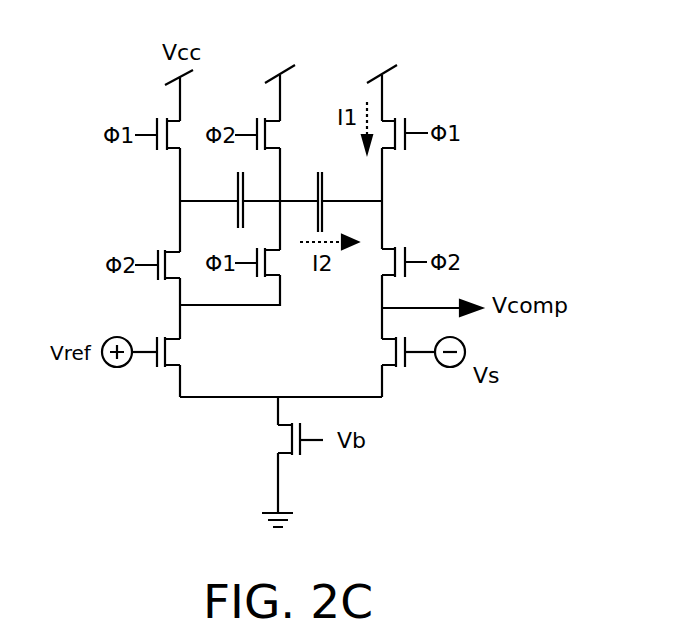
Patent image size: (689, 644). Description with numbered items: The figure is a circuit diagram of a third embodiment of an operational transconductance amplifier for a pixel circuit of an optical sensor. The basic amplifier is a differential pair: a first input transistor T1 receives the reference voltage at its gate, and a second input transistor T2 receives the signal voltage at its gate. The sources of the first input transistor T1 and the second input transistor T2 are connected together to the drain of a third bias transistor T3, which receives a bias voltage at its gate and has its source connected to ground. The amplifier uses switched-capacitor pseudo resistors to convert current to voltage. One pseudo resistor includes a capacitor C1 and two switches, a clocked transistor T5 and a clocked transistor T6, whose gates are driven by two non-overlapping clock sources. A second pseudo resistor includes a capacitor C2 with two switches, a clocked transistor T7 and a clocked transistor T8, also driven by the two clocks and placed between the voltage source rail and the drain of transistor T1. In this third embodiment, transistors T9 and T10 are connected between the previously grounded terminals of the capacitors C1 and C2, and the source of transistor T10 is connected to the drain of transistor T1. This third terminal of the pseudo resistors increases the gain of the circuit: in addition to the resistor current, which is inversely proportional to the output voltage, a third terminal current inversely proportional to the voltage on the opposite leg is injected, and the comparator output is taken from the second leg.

The clocked transistor T7 is at (168, 136).
The transistor T9 is at (267, 130).
The clocked transistor T5 is at (405, 118).
The capacitor C2 is at (236, 190).
The capacitor C1 is at (323, 187).
The clocked transistor T8 is at (158, 250).
The transistor T10 is at (267, 268).
The clocked transistor T6 is at (395, 259).
The first input transistor T1 is at (167, 352).
The second input transistor T2 is at (396, 352).
The third bias transistor T3 is at (290, 440).